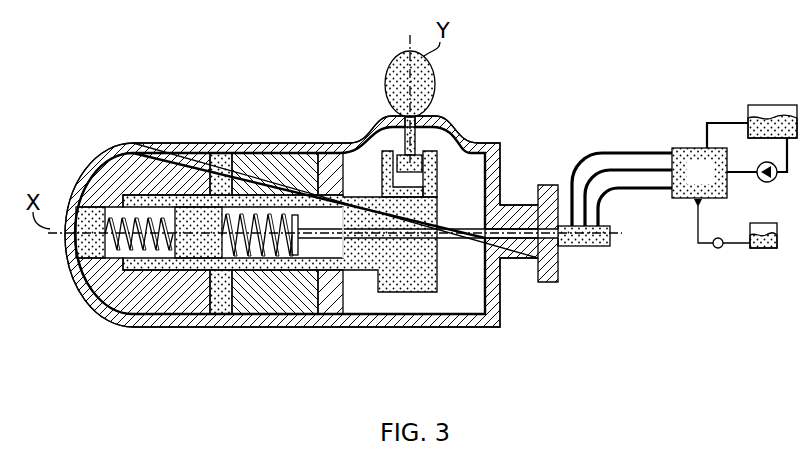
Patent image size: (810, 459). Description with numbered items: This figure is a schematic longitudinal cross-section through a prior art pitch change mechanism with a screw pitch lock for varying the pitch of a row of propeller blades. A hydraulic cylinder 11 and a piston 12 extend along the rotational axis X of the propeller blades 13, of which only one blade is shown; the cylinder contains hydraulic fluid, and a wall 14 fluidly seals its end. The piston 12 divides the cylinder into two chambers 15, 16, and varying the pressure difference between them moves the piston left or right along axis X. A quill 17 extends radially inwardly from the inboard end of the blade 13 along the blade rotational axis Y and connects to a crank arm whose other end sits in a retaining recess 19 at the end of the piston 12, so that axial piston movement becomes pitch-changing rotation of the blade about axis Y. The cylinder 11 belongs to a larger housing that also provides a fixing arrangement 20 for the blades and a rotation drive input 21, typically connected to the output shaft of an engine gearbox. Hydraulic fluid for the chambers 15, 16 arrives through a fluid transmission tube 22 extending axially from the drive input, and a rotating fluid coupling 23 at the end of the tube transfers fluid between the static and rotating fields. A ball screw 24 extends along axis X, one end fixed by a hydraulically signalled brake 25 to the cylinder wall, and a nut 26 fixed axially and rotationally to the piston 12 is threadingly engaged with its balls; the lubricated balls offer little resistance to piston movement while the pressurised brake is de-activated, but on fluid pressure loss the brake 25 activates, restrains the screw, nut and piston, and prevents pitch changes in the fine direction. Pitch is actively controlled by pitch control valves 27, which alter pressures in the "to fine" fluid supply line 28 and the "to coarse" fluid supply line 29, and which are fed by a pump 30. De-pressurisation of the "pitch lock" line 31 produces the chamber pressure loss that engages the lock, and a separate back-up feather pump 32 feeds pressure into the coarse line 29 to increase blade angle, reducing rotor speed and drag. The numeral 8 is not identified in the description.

The valve 8 is at (438, 150).
The hydraulic cylinder 11 is at (176, 328).
The piston 12 is at (221, 308).
The propeller blade 13 is at (396, 56).
The wall 14 is at (312, 144).
The chamber 15 is at (175, 158).
The chamber 16 is at (270, 154).
The quill 17 is at (418, 158).
The retaining recess 19 is at (383, 154).
The fixing arrangement 20 is at (420, 115).
The rotation drive input 21 is at (547, 180).
The fluid transmission tube 22 is at (377, 246).
The rotating fluid coupling 23 is at (584, 253).
The ball screw 24 is at (131, 224).
The hydraulically signalled brake 25 is at (89, 249).
The nut 26 is at (146, 282).
The pitch control valves 27 is at (711, 184).
The "to fine" fluid supply line 28 is at (637, 169).
The "to coarse" fluid supply line 29 is at (592, 156).
The pump 30 is at (759, 165).
The "pitch lock" line 31 is at (643, 190).
The back-up feather pump 32 is at (720, 250).